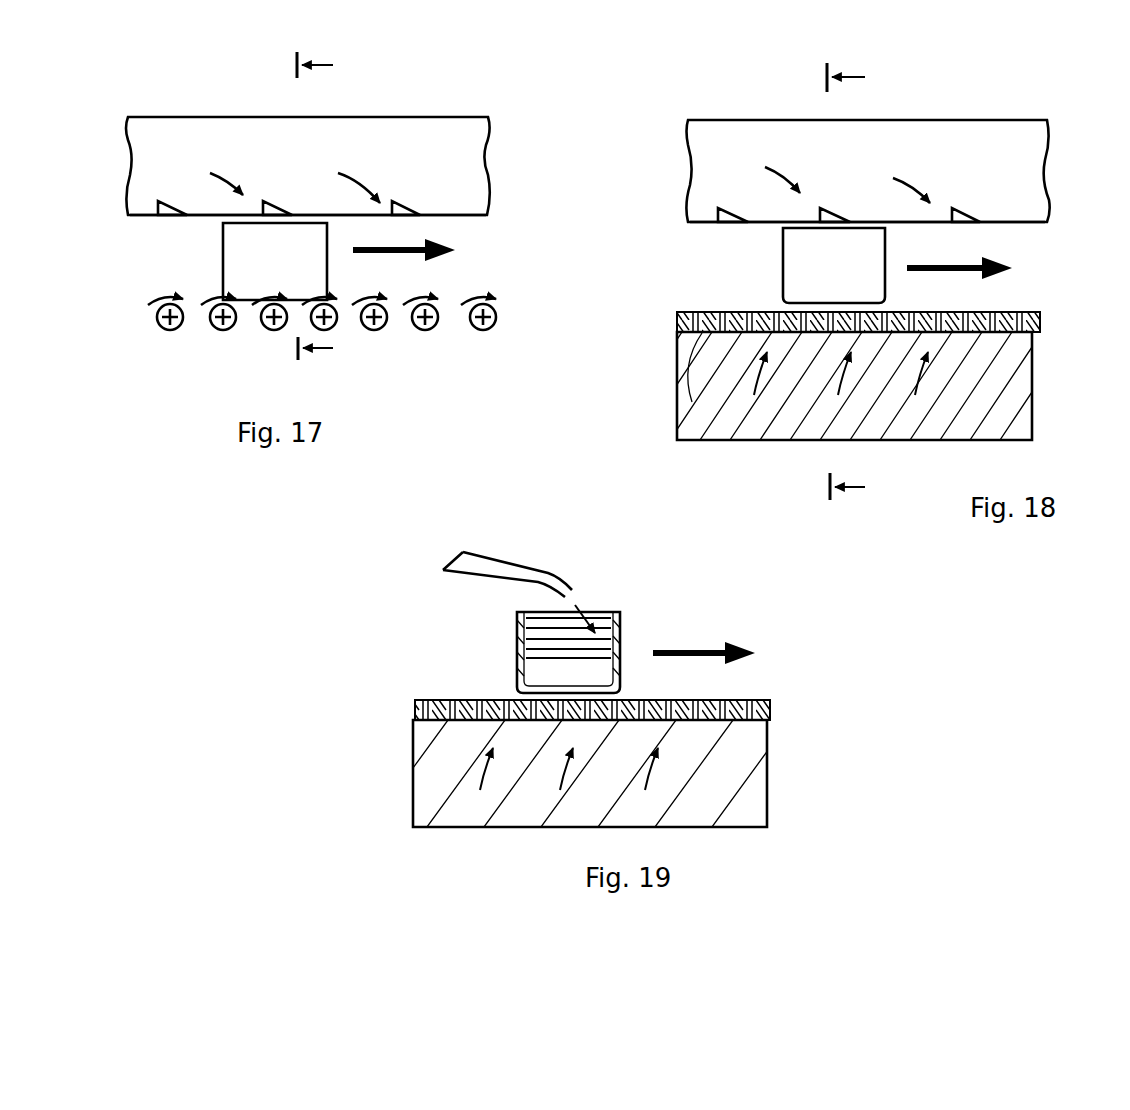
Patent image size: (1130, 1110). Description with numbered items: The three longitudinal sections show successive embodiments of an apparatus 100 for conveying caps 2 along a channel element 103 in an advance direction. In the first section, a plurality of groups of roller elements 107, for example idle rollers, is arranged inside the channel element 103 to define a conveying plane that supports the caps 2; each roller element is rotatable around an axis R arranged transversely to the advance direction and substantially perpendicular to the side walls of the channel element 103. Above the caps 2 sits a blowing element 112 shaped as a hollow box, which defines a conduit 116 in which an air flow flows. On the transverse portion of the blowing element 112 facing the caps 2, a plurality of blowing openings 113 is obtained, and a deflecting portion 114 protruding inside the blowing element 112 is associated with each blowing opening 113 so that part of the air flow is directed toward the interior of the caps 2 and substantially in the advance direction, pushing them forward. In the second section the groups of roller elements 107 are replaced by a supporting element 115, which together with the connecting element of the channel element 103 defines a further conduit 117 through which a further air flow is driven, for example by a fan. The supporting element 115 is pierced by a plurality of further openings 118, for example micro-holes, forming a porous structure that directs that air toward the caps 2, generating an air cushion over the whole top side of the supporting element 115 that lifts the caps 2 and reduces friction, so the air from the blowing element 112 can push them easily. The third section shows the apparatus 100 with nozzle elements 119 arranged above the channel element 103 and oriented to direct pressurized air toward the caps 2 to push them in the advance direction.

In FIG. 17, the cap 2 is at (223, 258).
In FIG. 18, the cap 2 is at (793, 268).
In FIG. 19, the cap 2 is at (517, 655).
In FIG. 17, the apparatus 100 is at (84, 398).
In FIG. 18, the apparatus 100 is at (593, 392).
In FIG. 19, the apparatus 100 is at (333, 660).
In FIG. 17, the channel element 103 is at (536, 250).
In FIG. 18, the channel element 103 is at (648, 302).
In FIG. 19, the channel element 103 is at (729, 616).
In FIG. 17, the roller elements 107 is at (203, 330).
In FIG. 17, the blowing element 112 is at (458, 143).
In FIG. 18, the blowing element 112 is at (1003, 147).
In FIG. 17, the blowing openings 113 is at (158, 203).
In FIG. 18, the blowing openings 113 is at (733, 207).
In FIG. 17, the deflecting portion 114 is at (183, 197).
In FIG. 18, the deflecting portion 114 is at (832, 207).
In FIG. 18, the supporting element 115 is at (1042, 315).
In FIG. 19, the supporting element 115 is at (768, 703).
In FIG. 17, the conduit 116 is at (362, 147).
In FIG. 18, the conduit 116 is at (928, 152).
In FIG. 18, the further conduit 117 is at (688, 440).
In FIG. 19, the further conduit 117 is at (430, 775).
In FIG. 18, the further openings 118 is at (680, 383).
In FIG. 19, the further openings 118 is at (445, 700).
In FIG. 19, the nozzle elements 119 is at (477, 553).
In FIG. 17, the axis R is at (387, 333).